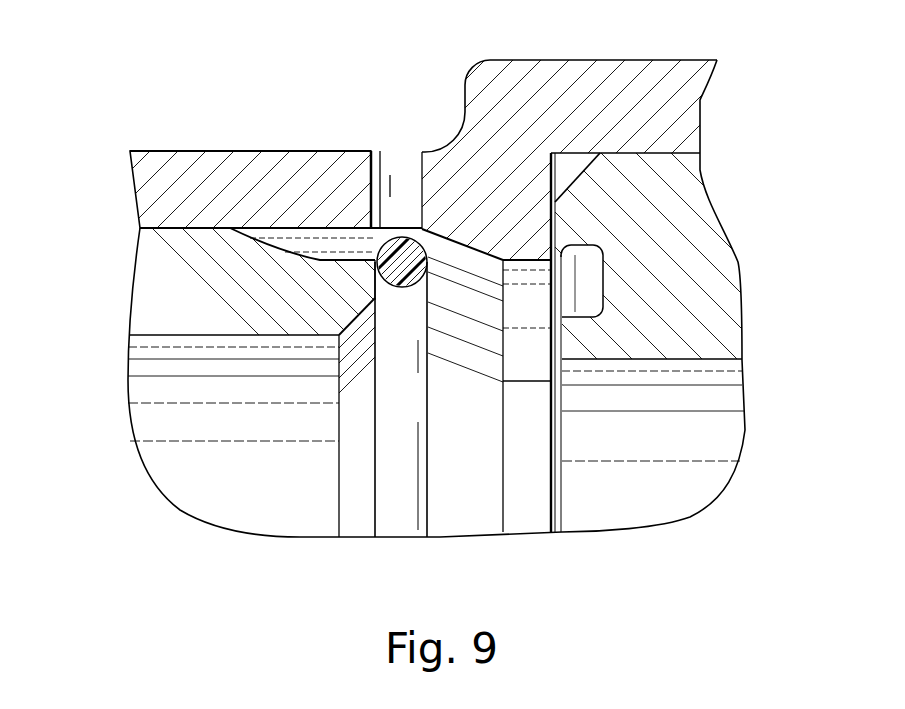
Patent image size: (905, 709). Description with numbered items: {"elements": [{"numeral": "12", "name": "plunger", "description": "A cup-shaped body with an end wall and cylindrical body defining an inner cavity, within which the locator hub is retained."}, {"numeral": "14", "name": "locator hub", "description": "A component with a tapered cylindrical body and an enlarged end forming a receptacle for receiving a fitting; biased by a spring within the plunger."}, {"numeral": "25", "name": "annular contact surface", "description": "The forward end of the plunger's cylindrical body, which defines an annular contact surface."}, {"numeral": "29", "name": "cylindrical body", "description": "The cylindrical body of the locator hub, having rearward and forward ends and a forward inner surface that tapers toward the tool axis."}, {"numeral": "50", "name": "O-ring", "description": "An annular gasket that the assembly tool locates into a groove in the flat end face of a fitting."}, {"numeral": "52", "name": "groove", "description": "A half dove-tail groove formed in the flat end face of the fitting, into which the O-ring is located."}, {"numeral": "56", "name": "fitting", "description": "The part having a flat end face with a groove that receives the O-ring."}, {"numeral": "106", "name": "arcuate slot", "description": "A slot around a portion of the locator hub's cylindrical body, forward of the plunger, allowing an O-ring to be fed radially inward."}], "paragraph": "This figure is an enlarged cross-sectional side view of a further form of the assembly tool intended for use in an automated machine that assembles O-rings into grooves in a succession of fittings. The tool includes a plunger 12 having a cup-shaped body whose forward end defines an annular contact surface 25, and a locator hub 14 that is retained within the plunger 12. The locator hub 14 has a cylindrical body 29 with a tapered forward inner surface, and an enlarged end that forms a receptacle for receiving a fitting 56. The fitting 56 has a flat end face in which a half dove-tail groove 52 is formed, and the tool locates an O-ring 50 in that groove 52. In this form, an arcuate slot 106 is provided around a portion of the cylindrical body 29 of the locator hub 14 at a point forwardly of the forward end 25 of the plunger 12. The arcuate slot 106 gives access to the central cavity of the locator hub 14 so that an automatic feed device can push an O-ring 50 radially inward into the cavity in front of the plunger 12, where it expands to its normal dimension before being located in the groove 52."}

The lower body / housing 12 is at (148, 318).
The plate 14 is at (232, 165).
The seal 25 is at (375, 295).
The top surface of plate 29 is at (193, 160).
The O-ring 50 is at (407, 288).
The groove 52 is at (603, 283).
The body member 56 is at (697, 235).
The gap 106 is at (395, 165).